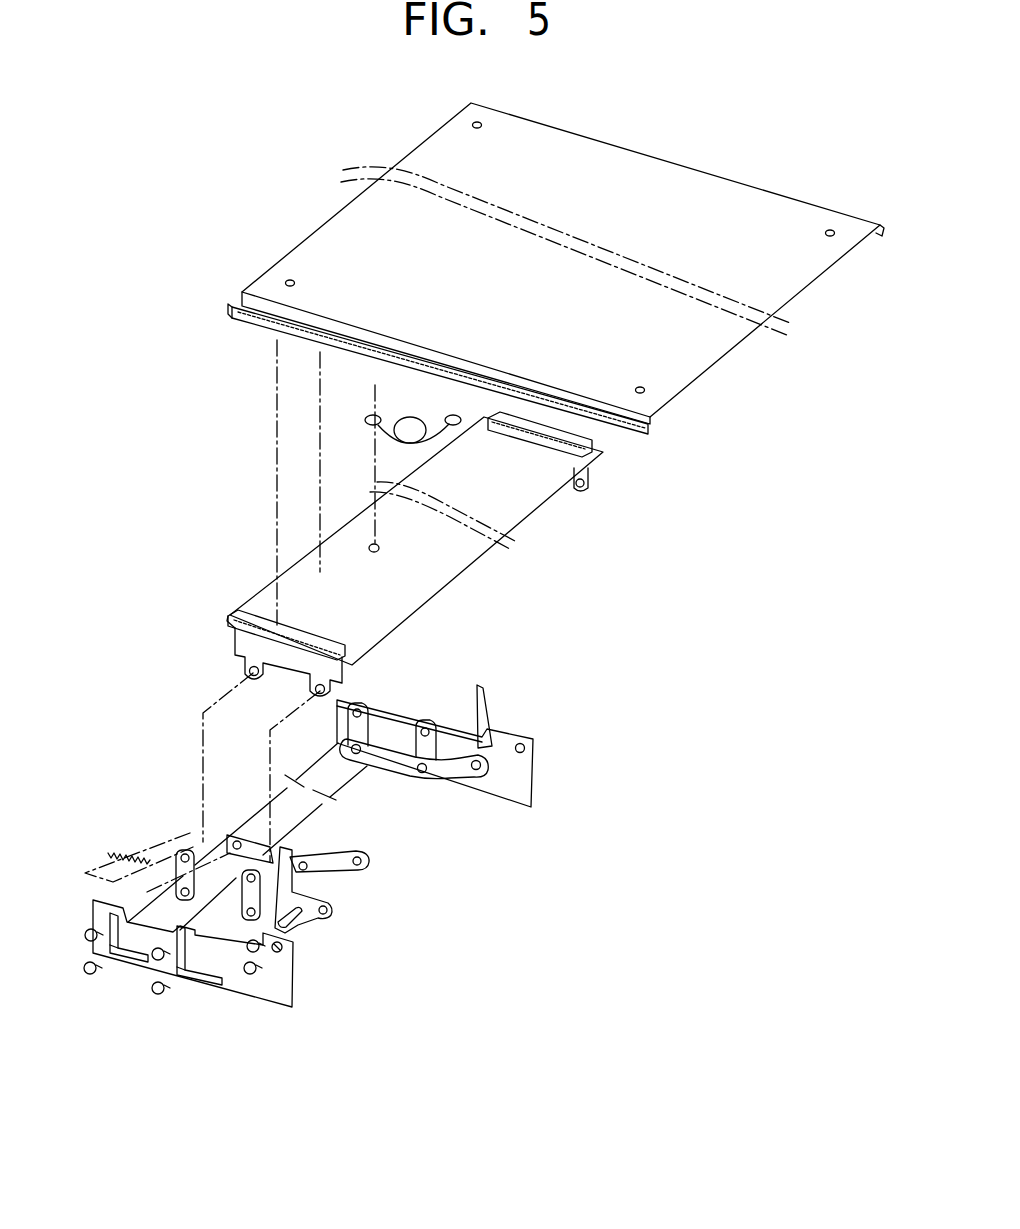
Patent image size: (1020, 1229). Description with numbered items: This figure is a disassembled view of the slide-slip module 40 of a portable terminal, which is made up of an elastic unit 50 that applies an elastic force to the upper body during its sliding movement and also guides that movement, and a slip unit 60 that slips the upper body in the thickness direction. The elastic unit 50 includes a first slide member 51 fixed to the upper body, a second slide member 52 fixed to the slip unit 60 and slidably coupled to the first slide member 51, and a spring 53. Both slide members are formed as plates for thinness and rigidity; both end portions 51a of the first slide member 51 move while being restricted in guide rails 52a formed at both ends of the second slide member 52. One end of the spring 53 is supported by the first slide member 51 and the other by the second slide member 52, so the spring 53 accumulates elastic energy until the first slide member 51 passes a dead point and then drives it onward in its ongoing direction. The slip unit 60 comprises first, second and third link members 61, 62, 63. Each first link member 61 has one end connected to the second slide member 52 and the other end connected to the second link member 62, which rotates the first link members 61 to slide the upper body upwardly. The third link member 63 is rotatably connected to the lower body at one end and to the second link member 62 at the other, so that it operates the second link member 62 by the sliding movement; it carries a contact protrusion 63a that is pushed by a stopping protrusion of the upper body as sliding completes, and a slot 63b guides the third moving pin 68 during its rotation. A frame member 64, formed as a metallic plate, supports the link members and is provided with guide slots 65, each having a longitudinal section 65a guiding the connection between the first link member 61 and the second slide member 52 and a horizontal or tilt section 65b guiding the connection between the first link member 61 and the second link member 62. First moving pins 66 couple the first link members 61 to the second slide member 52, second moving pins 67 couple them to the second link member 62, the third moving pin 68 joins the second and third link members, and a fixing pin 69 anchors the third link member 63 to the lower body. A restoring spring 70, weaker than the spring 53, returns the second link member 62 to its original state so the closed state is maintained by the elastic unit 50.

The slide-slip module 40 is at (160, 254).
The elastic unit 50 is at (132, 312).
The first slide member 51 is at (300, 263).
The end portions of the first slide member 51a is at (877, 232).
The second slide member 52 is at (347, 572).
The guide rails 52a is at (236, 612).
The spring 53 is at (368, 418).
The slip unit 60 is at (110, 805).
The first link member 61 is at (232, 930).
The second link member 62 is at (335, 866).
The third link member 63 is at (306, 912).
The contact protrusion 63a is at (292, 853).
The slot 63b is at (370, 860).
The frame member 64 is at (276, 985).
The guide slots 65 is at (98, 1086).
The longitudinal section 65a is at (175, 942).
The horizontal or tilt section 65b is at (205, 955).
The first moving pins 66 is at (88, 940).
The second moving pins 67 is at (88, 975).
The third moving pin 68 is at (246, 967).
The fixing pin 69 is at (252, 975).
The restoring spring 70 is at (132, 853).